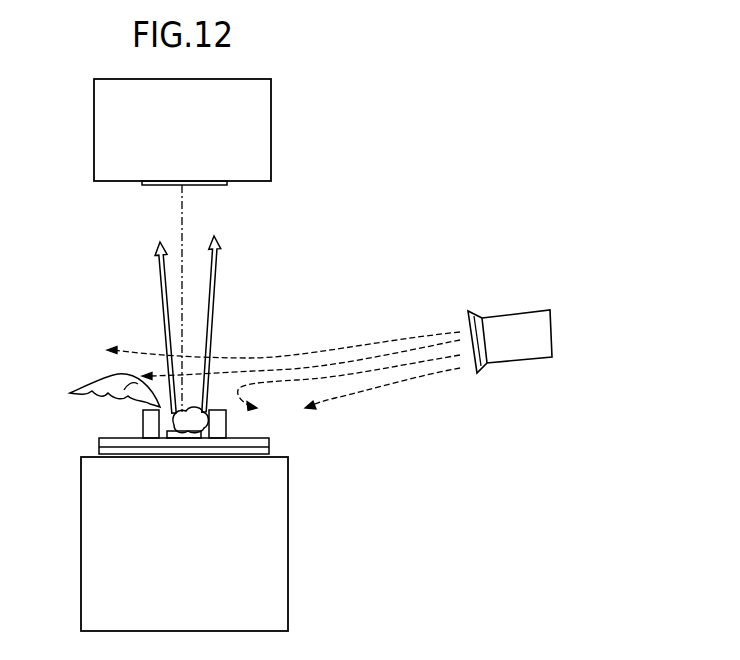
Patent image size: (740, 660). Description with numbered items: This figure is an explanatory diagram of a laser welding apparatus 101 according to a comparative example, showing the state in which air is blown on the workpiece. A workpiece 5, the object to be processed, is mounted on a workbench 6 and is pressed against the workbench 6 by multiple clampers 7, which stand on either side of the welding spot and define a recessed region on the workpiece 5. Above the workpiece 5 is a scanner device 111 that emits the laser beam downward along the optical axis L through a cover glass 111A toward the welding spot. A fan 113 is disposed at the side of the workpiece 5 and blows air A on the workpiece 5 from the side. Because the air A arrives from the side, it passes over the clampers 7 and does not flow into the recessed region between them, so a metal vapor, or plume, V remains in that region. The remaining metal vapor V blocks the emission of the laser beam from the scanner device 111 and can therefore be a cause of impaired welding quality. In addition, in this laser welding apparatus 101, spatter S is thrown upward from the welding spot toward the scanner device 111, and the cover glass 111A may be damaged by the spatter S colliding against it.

The laser welding apparatus 101 is at (396, 107).
The scanner device 111 is at (94, 121).
The cover glass 111A is at (160, 186).
The optical axis L is at (185, 208).
The spatter S is at (158, 295).
The clampers 7 is at (144, 427).
The workpiece 5 is at (269, 441).
The workbench 6 is at (288, 538).
The fan 113 is at (553, 330).
The air A is at (312, 357).
The metal vapor (plume) V is at (228, 418).